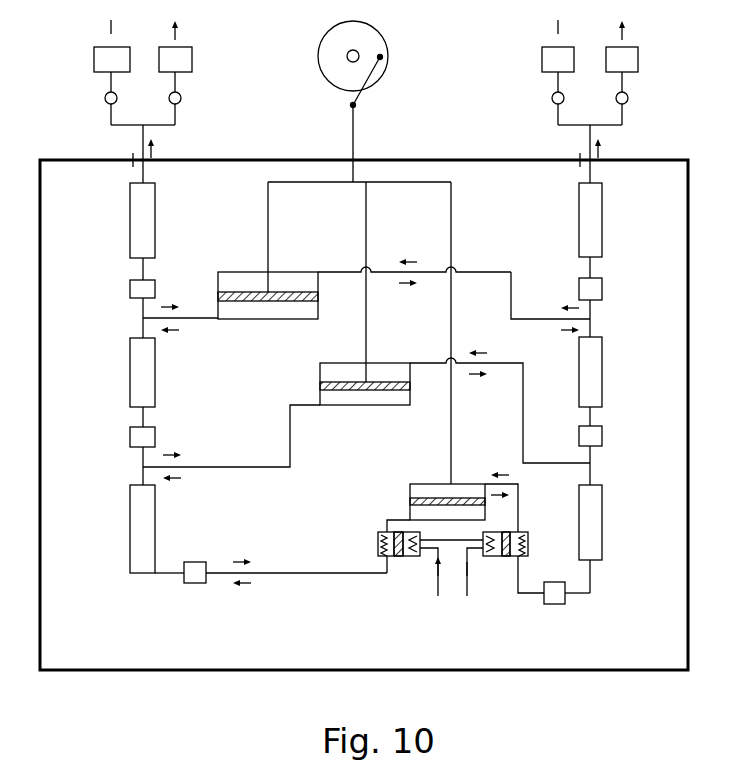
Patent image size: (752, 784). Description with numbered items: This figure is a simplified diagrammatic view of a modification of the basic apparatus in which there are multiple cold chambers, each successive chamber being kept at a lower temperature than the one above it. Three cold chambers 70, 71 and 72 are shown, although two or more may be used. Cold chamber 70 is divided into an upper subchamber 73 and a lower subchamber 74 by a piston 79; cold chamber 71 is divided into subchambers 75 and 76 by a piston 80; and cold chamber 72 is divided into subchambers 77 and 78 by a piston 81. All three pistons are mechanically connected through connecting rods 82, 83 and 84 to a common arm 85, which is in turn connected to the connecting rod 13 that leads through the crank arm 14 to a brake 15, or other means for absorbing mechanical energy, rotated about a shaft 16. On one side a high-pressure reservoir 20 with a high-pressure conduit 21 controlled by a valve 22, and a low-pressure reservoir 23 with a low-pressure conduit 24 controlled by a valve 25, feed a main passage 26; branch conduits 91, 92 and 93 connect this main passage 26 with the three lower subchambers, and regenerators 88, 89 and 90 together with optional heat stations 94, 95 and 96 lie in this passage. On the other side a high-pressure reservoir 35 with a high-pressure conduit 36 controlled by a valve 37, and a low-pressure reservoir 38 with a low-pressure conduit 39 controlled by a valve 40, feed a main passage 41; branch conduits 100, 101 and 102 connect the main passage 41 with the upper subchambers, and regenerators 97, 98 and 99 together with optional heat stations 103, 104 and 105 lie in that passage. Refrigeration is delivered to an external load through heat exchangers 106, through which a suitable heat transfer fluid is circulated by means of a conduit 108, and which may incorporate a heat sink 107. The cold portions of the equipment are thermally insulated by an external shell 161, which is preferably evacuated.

The connecting rod 13 is at (355, 148).
The crank arm 14 is at (375, 61).
The brake 15 is at (370, 26).
The shaft 16 is at (359, 52).
The high-pressure reservoir 20 is at (102, 47).
The high-pressure conduit 21 is at (116, 125).
The valve 22 is at (105, 99).
The low-pressure reservoir 23 is at (180, 48).
The low-pressure conduit 24 is at (165, 125).
The valve 25 is at (180, 99).
The main passage 26 is at (147, 171).
The high-pressure reservoir 35 is at (549, 47).
The high-pressure conduit 36 is at (563, 125).
The valve 37 is at (552, 99).
The low-pressure reservoir 38 is at (627, 48).
The low-pressure conduit 39 is at (611, 125).
The valve 40 is at (628, 99).
The main passage 41 is at (593, 171).
The cold chamber 70 is at (242, 270).
The cold chamber 71 is at (350, 362).
The cold chamber 72 is at (446, 482).
The upper subchamber 73 is at (218, 282).
The lower subchamber 74 is at (287, 311).
The subchamber 75 is at (327, 374).
The subchamber 76 is at (342, 407).
The subchamber 77 is at (408, 491).
The subchamber 78 is at (442, 515).
The piston 79 is at (318, 297).
The piston 80 is at (371, 398).
The piston 81 is at (410, 503).
The connecting rod 82 is at (268, 229).
The connecting rod 83 is at (366, 229).
The connecting rod 84 is at (451, 229).
The common arm 85 is at (400, 182).
The regenerator 88 is at (138, 226).
The regenerator 89 is at (134, 365).
The regenerator 90 is at (136, 515).
The branch conduit 91 is at (185, 319).
The branch conduit 92 is at (202, 467).
The branch conduit 93 is at (275, 573).
The heat station 94 is at (130, 290).
The heat station 95 is at (130, 438).
The heat station 96 is at (188, 580).
The regenerator 97 is at (594, 229).
The regenerator 98 is at (595, 363).
The regenerator 99 is at (597, 517).
The branch conduit 100 is at (514, 283).
The branch conduit 101 is at (523, 377).
The branch conduit 102 is at (518, 594).
The heat station 103 is at (594, 289).
The heat station 104 is at (594, 436).
The heat station 105 is at (560, 598).
The heat exchanger 106 is at (380, 546).
The heat sink 107 is at (406, 556).
The conduit 108 is at (438, 596).
The external shell 161 is at (40, 598).